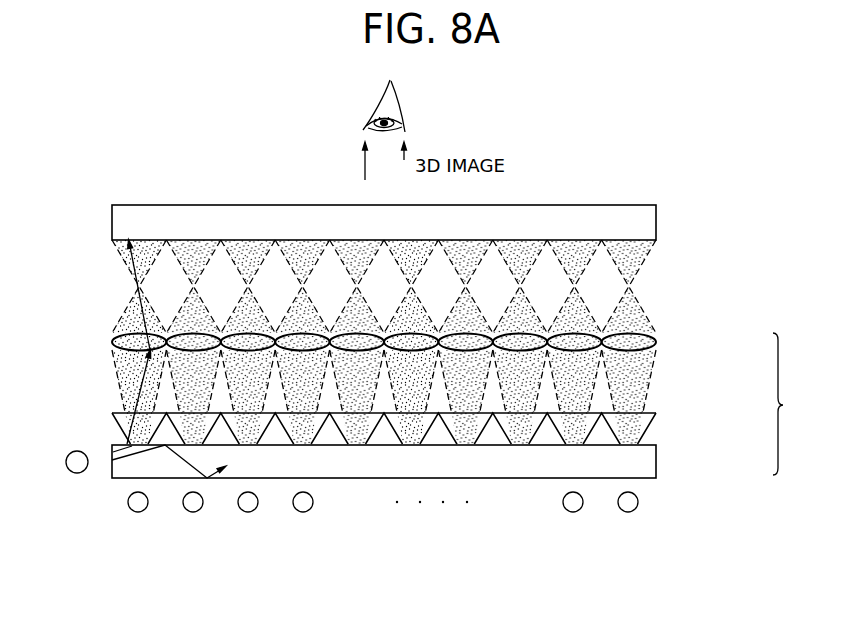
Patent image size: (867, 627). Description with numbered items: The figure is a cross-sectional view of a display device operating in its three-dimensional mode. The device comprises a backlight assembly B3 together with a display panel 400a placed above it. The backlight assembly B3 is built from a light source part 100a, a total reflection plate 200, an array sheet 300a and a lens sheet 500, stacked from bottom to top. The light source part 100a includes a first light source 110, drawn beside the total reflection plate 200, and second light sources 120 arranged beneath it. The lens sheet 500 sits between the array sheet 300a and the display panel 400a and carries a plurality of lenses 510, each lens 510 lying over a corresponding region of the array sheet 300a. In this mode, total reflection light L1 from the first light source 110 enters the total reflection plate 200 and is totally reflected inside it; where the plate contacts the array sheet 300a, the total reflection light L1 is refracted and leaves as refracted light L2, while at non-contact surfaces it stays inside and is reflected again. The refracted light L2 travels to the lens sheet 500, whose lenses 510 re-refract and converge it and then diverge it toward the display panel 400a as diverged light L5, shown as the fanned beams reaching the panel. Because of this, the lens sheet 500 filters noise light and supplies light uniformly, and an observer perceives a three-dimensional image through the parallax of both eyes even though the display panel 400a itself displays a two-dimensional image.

The display panel 400a is at (656, 220).
The lens sheet 500 is at (377, 330).
The lens 510 is at (656, 343).
The array sheet 300a is at (661, 409).
The total reflection plate 200 is at (656, 461).
The light source part 100a is at (348, 529).
The first light source 110 is at (77, 473).
The second light source 120 is at (379, 533).
The total reflection light L1 is at (182, 461).
The refracted light L2 is at (143, 380).
The diverged light L5 is at (132, 261).
The backlight assembly B3 is at (790, 404).